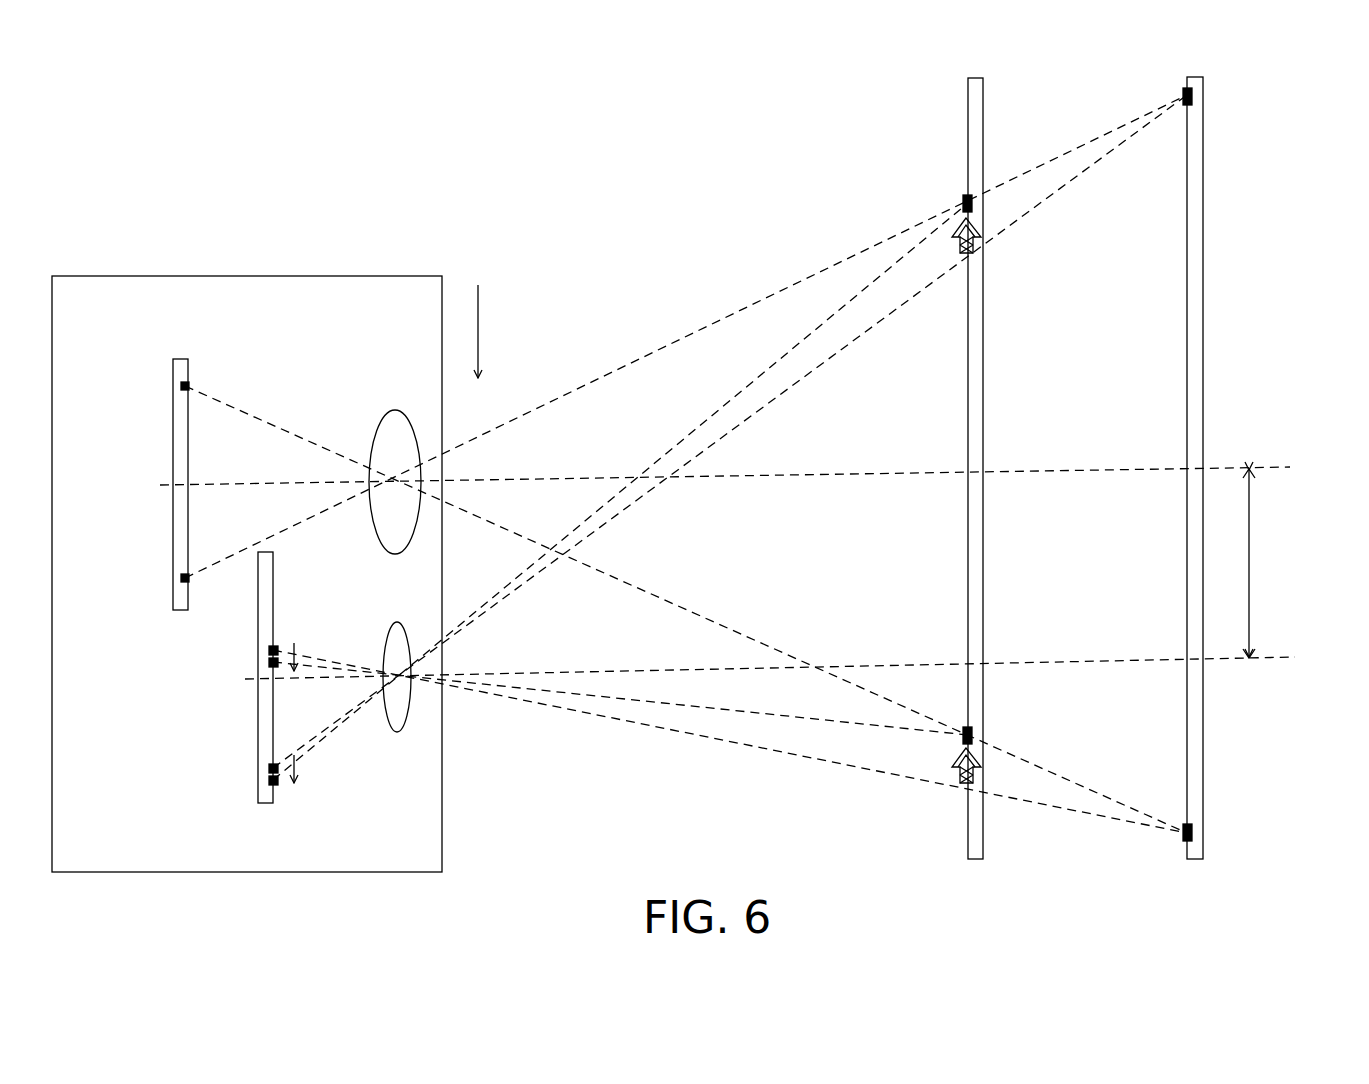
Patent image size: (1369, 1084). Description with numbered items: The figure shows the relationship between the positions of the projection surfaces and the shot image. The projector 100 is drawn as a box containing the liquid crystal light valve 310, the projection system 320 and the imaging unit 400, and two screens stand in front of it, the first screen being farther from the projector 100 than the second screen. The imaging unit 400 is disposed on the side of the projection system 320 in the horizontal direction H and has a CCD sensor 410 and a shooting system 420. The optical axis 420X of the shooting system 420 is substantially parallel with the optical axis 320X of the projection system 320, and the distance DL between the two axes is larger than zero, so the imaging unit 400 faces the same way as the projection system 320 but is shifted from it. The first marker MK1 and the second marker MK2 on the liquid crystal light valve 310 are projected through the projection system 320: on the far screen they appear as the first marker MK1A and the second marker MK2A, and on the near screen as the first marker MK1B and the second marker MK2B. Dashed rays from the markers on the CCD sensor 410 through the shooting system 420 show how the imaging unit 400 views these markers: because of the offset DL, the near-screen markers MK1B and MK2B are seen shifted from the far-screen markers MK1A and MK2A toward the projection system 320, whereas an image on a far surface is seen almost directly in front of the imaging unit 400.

The projector 100 is at (160, 275).
The liquid crystal light valve 310 is at (188, 372).
The projection system 320 is at (396, 412).
The imaging unit 400 is at (355, 789).
The CCD sensor 410 is at (270, 804).
The shooting system 420 is at (397, 733).
The optical axis of the projection system 320X is at (1215, 467).
The optical axis of the shooting system 420X is at (1215, 660).
The horizontal direction H is at (465, 331).
The distance between optical axes DL is at (1269, 563).
The first marker MK1 is at (182, 578).
The second marker MK2 is at (182, 386).
The first marker on first screen MK1A is at (1205, 98).
The first marker on second screen MK1B is at (962, 204).
The second marker on first screen MK2A is at (1194, 833).
The second marker on second screen MK2B is at (974, 736).